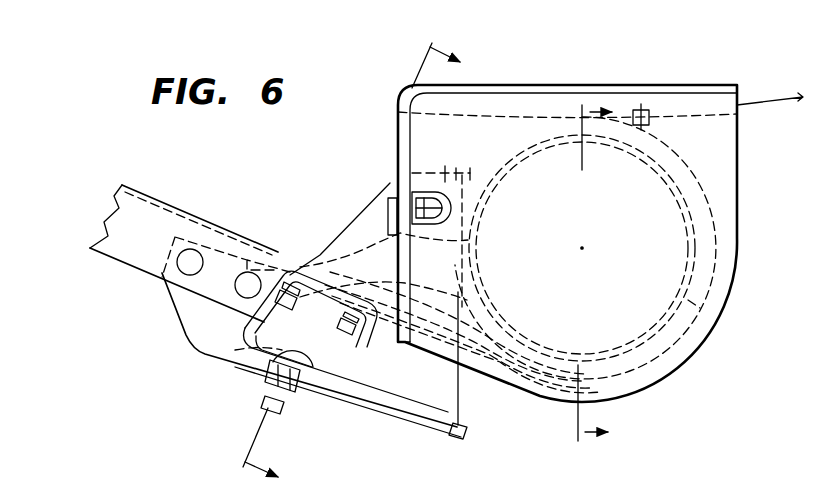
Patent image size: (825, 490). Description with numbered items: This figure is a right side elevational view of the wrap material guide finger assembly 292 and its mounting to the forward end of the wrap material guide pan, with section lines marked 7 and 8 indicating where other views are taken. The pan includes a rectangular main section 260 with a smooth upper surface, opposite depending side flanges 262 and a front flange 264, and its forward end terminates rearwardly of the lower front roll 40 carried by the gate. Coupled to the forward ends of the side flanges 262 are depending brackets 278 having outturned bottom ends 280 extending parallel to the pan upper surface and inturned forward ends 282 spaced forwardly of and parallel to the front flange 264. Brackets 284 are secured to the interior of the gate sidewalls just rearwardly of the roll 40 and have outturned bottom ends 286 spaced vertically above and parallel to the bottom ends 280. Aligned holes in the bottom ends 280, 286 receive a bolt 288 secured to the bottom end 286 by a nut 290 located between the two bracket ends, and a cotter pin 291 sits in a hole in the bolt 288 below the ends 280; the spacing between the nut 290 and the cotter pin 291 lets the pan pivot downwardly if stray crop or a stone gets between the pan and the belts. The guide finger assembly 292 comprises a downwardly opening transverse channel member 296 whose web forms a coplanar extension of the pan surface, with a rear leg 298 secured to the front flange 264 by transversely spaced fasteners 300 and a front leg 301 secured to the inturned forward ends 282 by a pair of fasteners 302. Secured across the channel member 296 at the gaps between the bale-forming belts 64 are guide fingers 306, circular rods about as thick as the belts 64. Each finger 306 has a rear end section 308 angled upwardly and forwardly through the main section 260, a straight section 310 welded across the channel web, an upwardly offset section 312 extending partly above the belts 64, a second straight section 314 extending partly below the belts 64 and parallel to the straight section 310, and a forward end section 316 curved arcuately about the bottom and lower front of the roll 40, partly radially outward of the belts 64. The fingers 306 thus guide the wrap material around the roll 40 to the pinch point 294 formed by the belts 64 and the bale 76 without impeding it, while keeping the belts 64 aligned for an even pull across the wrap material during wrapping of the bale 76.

The section line 7- 7 is at (343, 255).
The section line 8- 8 is at (585, 270).
The lower front roll 40 is at (528, 148).
The bale-forming belts 64 is at (710, 218).
The bale 76 is at (768, 109).
The rectangular main section 260 is at (147, 210).
The side flanges 262 is at (112, 258).
The front flange 264 is at (210, 358).
The depending brackets 278 is at (180, 322).
The outturned bottom ends 280 is at (258, 378).
The inturned forward ends 282 is at (332, 350).
The brackets 284 is at (392, 188).
The outturned bottom ends 286 is at (443, 432).
The bolt 288 is at (265, 412).
The nut 290 is at (293, 385).
The cotter pin 291 is at (265, 407).
The guide finger assembly 292 is at (420, 178).
The pinch point 294 is at (655, 137).
The transverse channel member 296 is at (468, 238).
The rear leg 298 is at (262, 366).
The fasteners 300 is at (327, 262).
The front leg 301 is at (368, 360).
The fasteners 302 is at (372, 348).
The guide fingers 306 is at (612, 378).
The rear end section 308 is at (275, 252).
The straight section 310 is at (355, 260).
The upwardly offset section 312 is at (472, 270).
The second straight section 314 is at (482, 352).
The forward end section 316 is at (690, 335).